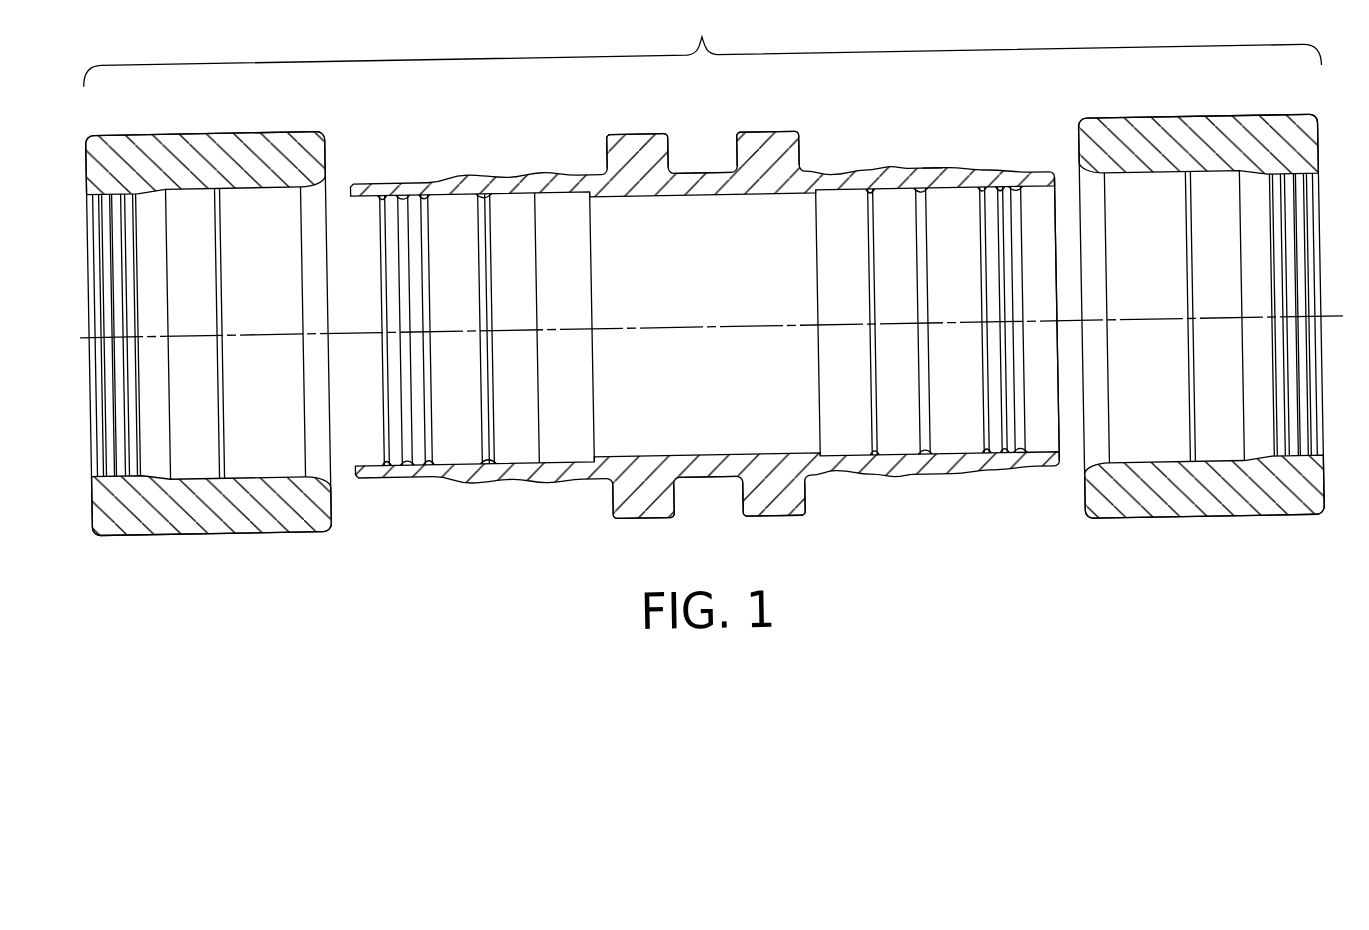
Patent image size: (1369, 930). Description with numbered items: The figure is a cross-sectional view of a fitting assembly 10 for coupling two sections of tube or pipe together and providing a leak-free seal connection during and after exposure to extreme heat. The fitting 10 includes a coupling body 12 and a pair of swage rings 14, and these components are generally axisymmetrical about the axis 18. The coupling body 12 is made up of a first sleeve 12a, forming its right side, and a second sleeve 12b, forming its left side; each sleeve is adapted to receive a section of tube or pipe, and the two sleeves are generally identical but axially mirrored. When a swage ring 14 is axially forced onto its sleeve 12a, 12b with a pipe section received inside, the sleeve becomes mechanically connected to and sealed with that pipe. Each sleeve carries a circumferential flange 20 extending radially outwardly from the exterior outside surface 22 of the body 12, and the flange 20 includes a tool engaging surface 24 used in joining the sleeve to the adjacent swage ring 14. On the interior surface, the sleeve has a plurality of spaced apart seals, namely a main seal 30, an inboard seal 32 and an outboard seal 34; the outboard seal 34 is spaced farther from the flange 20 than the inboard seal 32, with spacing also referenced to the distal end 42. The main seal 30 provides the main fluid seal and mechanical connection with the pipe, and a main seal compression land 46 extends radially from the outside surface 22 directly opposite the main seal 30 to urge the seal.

The fitting assembly 10 is at (702, 43).
The coupling body 12 is at (674, 186).
The first sleeve 12a is at (900, 468).
The second sleeve 12b is at (507, 470).
The swage ring 14 is at (193, 127).
The axis 18 is at (678, 327).
The circumferential flange 20 is at (783, 146).
The exterior outside surface 22 is at (700, 160).
The tool engaging surface 24 is at (736, 161).
The main seal 30 is at (919, 200).
The inboard seal 32 is at (864, 196).
The outboard seal 34 is at (1032, 199).
The distal end 42 is at (1070, 181).
The main seal compression land 46 is at (933, 168).